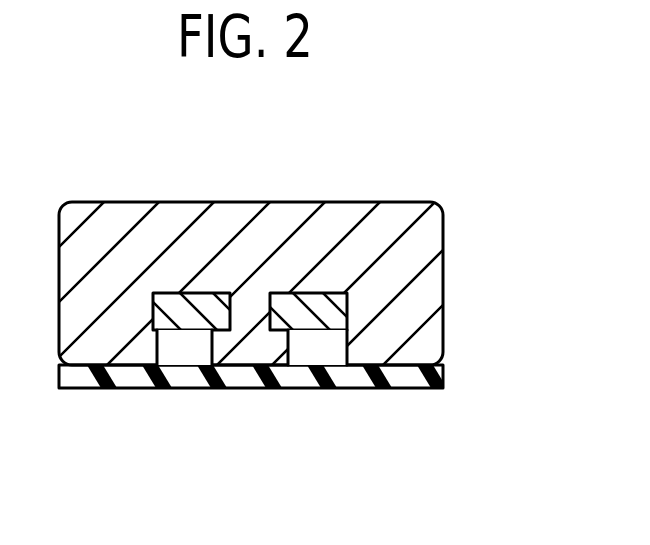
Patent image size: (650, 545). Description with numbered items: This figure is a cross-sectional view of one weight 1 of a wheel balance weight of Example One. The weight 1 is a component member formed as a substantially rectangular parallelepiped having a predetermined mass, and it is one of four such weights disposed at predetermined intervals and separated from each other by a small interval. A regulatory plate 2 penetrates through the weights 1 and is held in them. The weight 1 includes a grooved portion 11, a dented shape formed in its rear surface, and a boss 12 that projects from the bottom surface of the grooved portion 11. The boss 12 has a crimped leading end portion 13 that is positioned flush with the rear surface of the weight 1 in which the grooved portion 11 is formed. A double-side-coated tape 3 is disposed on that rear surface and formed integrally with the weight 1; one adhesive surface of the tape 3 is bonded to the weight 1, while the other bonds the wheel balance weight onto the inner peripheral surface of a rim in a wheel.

The weight 1 is at (240, 218).
The regulatory plate 2 is at (197, 302).
The double-side-coated tape 3 is at (350, 372).
The grooved portion 11 is at (183, 357).
The boss 12 is at (248, 313).
The leading end portion 13 is at (247, 340).